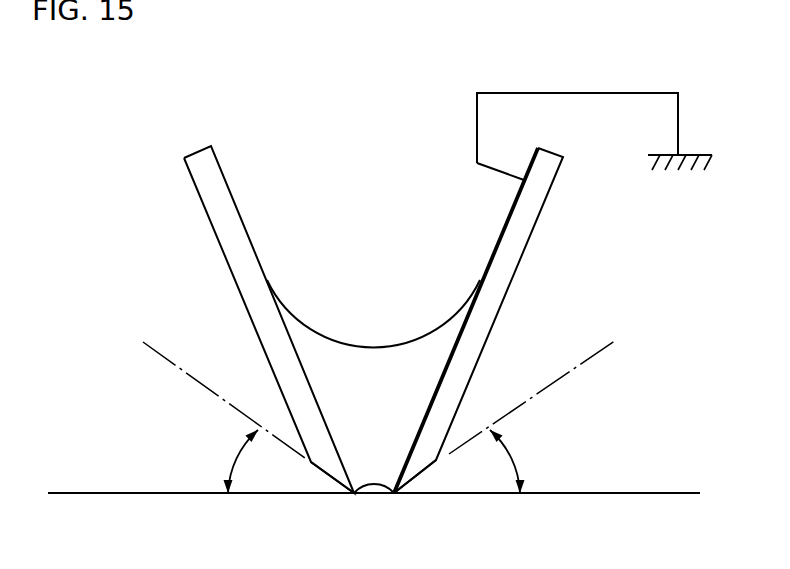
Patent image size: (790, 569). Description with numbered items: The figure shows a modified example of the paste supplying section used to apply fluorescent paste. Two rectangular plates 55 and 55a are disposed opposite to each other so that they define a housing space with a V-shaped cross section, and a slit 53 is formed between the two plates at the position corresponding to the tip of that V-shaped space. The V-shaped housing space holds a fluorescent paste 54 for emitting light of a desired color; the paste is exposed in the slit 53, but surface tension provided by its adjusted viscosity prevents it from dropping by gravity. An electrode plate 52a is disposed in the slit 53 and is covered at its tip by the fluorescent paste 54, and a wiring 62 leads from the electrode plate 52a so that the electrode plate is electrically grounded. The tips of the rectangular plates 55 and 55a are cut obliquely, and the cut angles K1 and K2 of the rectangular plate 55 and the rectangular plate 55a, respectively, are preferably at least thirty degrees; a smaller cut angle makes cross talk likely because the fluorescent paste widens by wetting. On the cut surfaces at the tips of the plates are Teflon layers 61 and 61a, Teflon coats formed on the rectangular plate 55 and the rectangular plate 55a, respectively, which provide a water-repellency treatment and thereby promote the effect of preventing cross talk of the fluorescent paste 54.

The wiring 62 is at (612, 93).
The rectangular plate 55 is at (525, 223).
The rectangular plate 55a is at (225, 227).
The electrode plate 52a is at (445, 364).
The fluorescent paste 54 is at (370, 365).
The slit 53 is at (372, 486).
The Teflon layer 61 is at (415, 480).
The Teflon layer 61a is at (330, 473).
The cut angle K1 is at (508, 451).
The cut angle K2 is at (240, 451).